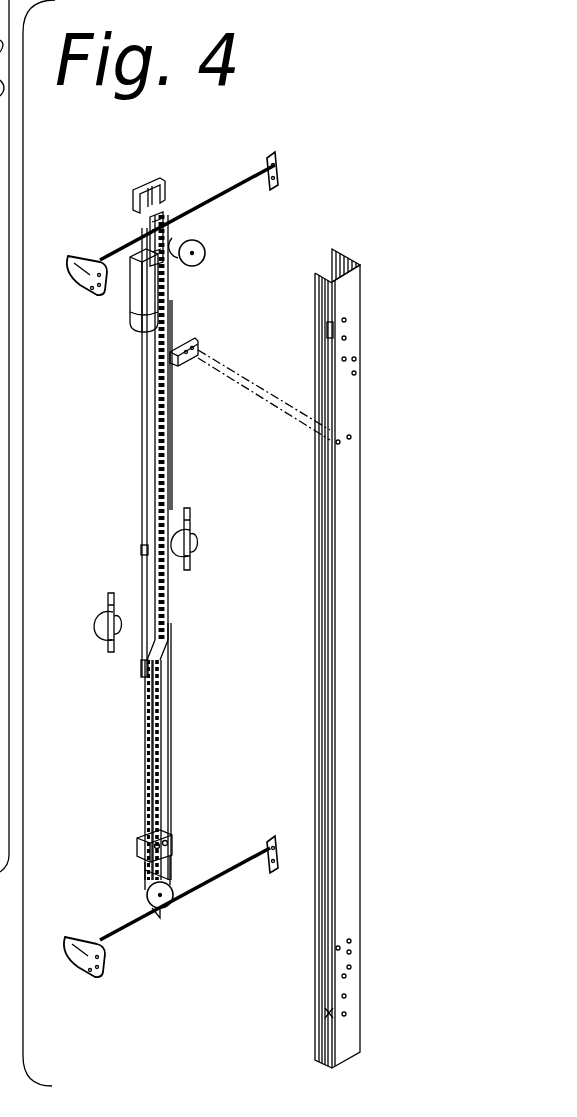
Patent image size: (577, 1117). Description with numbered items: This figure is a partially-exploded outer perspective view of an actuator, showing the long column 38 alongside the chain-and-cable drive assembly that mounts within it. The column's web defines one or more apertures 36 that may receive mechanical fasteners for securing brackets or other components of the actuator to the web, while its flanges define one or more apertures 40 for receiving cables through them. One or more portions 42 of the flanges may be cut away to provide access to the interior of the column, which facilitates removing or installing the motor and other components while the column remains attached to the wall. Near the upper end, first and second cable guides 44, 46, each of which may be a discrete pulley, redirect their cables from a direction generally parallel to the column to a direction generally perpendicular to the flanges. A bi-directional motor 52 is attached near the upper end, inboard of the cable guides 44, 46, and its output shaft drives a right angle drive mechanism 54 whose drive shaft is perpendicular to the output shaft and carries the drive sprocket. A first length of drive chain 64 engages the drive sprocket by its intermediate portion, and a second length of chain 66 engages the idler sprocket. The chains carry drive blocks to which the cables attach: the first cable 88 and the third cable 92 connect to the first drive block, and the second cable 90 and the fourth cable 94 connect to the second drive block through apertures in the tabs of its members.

The apertures 36 is at (352, 952).
The channel member 38 is at (354, 265).
The apertures 40 is at (332, 331).
The cut-away portions 42 is at (313, 387).
The first cable guide 44 is at (164, 228).
The second cable guide 46 is at (192, 263).
The bi-directional motor 52 is at (145, 302).
The right angle drive mechanism 54 is at (135, 270).
The first length of drive chain 64 is at (172, 458).
The second length of chain 66 is at (143, 713).
The first cable 88 is at (120, 241).
The second cable 90 is at (222, 187).
The third cable 92 is at (133, 927).
The fourth cable 94 is at (222, 867).